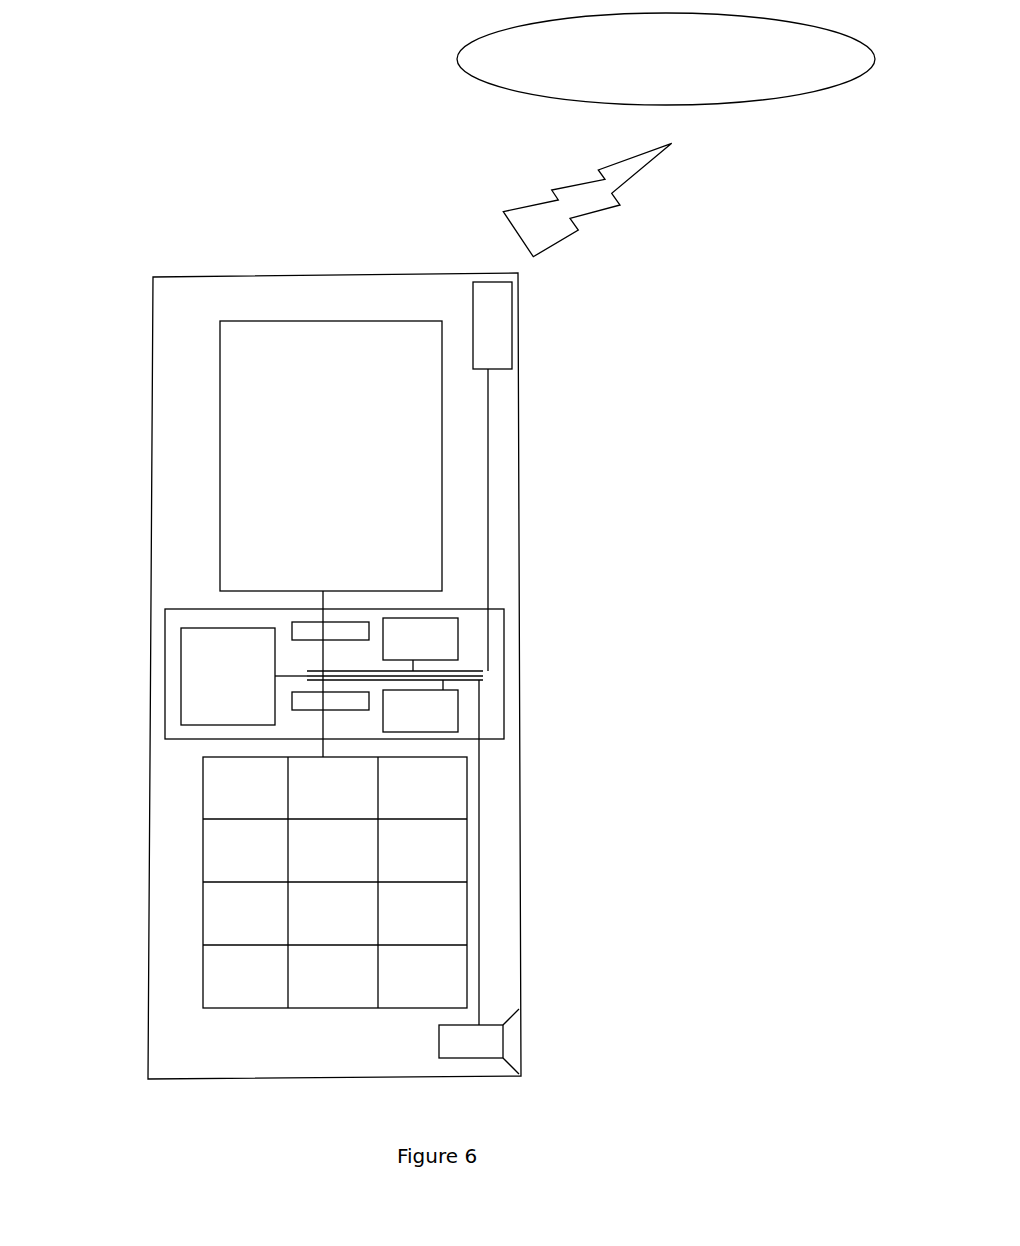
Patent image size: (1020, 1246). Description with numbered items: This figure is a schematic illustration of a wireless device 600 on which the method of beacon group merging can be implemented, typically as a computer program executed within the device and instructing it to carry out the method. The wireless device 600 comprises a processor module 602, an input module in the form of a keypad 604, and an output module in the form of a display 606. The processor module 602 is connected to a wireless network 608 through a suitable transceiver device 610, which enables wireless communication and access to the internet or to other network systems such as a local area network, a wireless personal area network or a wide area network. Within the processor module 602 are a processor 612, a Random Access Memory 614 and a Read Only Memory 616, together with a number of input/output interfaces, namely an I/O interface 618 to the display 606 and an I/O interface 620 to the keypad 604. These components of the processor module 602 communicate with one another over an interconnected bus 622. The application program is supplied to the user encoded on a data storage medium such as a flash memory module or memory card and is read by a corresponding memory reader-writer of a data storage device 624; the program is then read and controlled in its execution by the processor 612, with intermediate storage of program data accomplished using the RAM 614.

The wireless device 600 is at (120, 1053).
The processor module 602 is at (507, 637).
The keypad 604 is at (222, 862).
The display 606 is at (278, 348).
The wireless network 608 is at (722, 105).
The transceiver device 610 is at (492, 360).
The processor 612 is at (223, 672).
The Random Access Memory (RAM) 614 is at (433, 633).
The Read Only Memory (ROM) 616 is at (432, 698).
The I/O interface to the display 618 is at (300, 632).
The I/O interface to the keypad 620 is at (325, 703).
The interconnected bus 622 is at (488, 673).
The data storage device 624 is at (445, 1055).